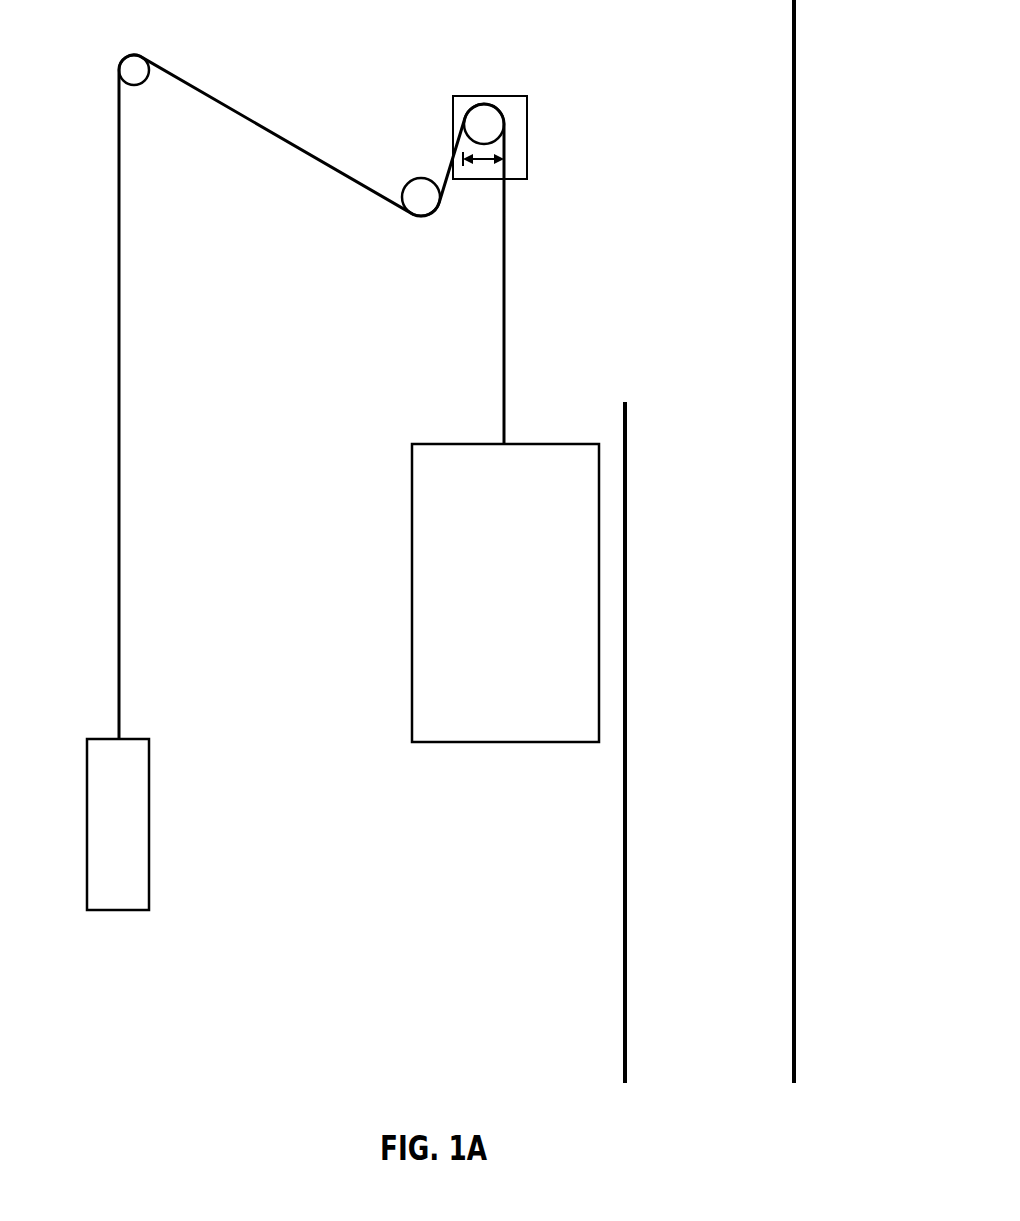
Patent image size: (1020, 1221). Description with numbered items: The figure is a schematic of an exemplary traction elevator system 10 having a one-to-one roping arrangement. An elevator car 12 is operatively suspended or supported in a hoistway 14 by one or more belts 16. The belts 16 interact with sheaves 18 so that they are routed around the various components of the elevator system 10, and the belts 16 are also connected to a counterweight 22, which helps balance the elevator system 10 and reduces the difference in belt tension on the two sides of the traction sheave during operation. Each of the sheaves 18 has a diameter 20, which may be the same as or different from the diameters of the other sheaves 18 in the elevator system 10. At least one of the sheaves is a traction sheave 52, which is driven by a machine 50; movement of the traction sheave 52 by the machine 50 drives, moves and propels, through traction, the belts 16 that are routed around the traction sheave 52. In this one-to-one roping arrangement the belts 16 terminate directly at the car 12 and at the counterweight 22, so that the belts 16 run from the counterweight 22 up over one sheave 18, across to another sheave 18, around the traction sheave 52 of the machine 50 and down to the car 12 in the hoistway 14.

The elevator system 10 is at (649, 43).
The elevator car 12 is at (521, 607).
The hoistway 14 is at (626, 637).
The belt 16 is at (300, 152).
The sheave 18 is at (127, 58).
The diameter 20 is at (485, 162).
The counterweight 22 is at (134, 838).
The machine 50 is at (473, 96).
The traction sheave 52 is at (484, 104).